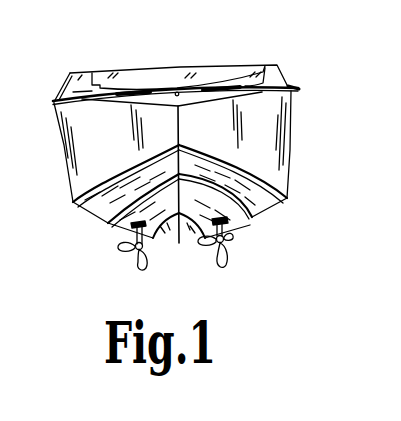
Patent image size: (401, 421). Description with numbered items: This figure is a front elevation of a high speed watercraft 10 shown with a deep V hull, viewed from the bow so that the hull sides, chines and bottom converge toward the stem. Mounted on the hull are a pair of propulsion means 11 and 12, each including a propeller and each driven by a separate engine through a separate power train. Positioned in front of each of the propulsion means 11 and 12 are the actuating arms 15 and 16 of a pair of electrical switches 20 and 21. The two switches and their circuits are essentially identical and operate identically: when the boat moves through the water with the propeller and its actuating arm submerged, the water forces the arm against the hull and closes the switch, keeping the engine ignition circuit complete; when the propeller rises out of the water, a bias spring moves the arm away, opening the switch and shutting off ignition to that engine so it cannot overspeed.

The watercraft 10 is at (318, 80).
The propulsion means 11 is at (126, 266).
The propulsion means 12 is at (238, 258).
The actuating arm 15 is at (117, 243).
The actuating arm 16 is at (233, 241).
The electrical switch 20 is at (103, 250).
The electrical switch 21 is at (243, 229).